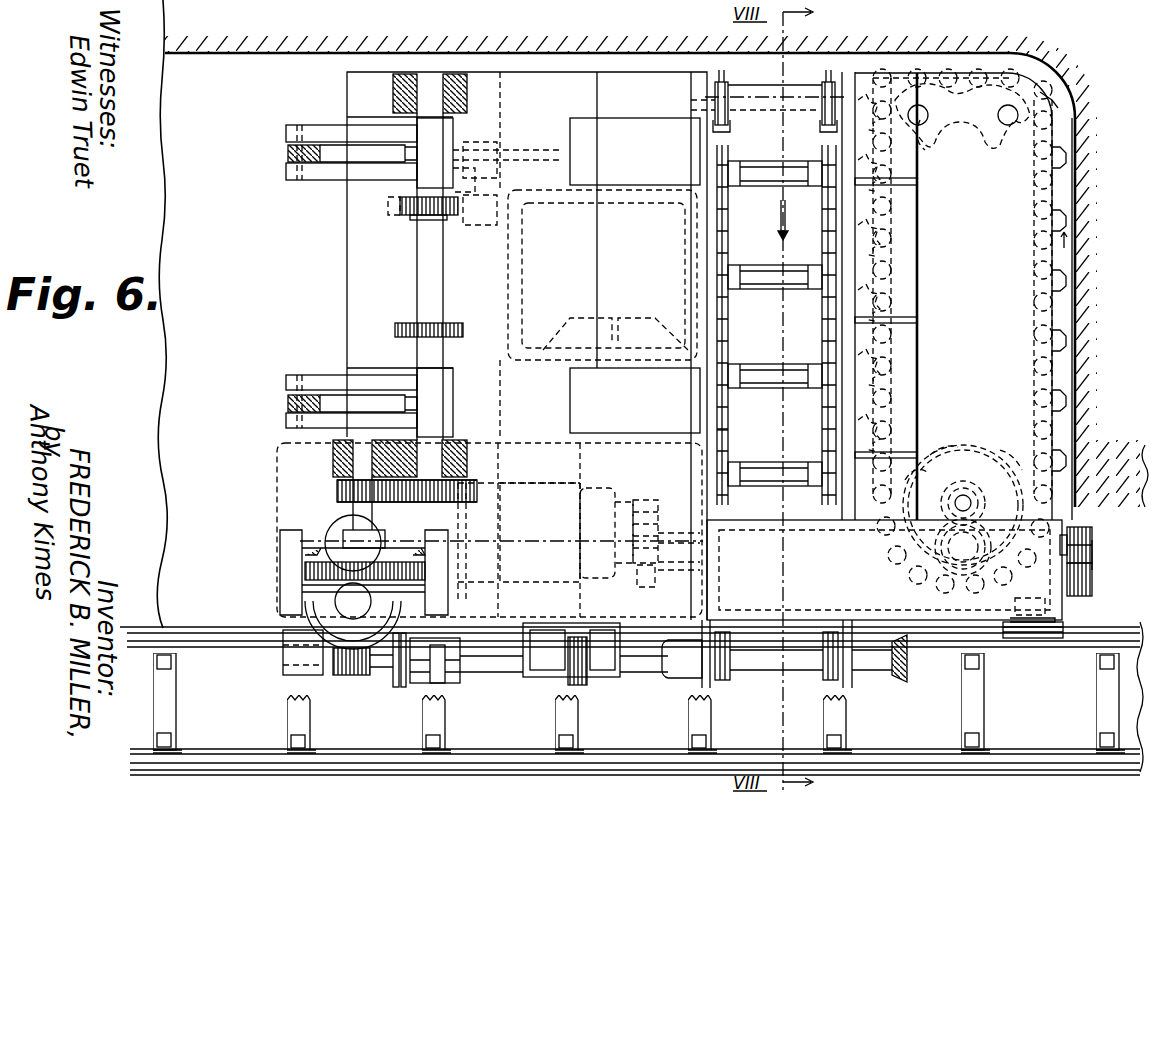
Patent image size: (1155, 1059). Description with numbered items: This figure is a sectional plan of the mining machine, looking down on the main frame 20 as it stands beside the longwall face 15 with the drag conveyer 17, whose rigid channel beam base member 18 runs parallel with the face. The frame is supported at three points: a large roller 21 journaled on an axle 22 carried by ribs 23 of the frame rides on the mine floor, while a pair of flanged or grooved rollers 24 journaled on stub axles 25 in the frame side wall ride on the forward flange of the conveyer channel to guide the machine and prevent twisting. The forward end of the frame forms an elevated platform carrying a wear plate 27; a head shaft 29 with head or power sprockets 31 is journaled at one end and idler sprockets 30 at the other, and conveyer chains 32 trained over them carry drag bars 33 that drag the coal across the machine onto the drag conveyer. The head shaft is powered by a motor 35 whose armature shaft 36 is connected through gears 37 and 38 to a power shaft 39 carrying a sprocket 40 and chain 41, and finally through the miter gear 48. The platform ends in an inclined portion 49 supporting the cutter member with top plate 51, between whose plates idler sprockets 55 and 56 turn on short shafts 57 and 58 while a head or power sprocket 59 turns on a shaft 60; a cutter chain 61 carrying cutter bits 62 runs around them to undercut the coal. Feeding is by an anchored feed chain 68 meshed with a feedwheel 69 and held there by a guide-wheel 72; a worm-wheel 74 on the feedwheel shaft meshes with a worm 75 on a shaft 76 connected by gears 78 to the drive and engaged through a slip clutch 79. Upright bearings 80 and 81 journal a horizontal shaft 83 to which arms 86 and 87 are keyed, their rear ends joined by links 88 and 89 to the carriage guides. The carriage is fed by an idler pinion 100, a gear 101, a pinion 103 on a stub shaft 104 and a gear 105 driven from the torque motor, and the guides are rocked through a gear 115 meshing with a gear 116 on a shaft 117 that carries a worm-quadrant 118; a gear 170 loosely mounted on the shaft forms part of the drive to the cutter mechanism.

The longwall face 15 is at (1123, 498).
The drag conveyer 17 is at (165, 707).
The channel beam base member 18 is at (142, 621).
The main frame 20 is at (347, 300).
The large roller 21 is at (688, 300).
The axle 22 is at (612, 282).
The ribs 23 is at (532, 190).
The flanged or grooved rollers 24 is at (1038, 638).
The stub axles 25 is at (1045, 605).
The wear plate 27 is at (776, 325).
The head shaft 29 is at (668, 660).
The idler sprockets 30 is at (822, 78).
The head or power sprockets 31 is at (722, 680).
The conveyer chains 32 is at (730, 437).
The drag bars 33 is at (768, 364).
The motor 35 is at (600, 492).
The armature shaft 36 is at (620, 529).
The gear 37 is at (652, 500).
The gear 38 is at (645, 590).
The power shaft 39 is at (1092, 551).
The sprocket 40 is at (1085, 536).
The chain 41 is at (1092, 583).
The miter gear 48 is at (906, 680).
The inclined portion 49 is at (912, 379).
The top plate 51 is at (1010, 352).
The idler sprocket 55 is at (920, 120).
The idler sprocket 56 is at (990, 130).
The short shaft 57 is at (925, 150).
The short shaft 58 is at (1012, 118).
The head or power sprocket 59 is at (947, 430).
The shaft 60 is at (963, 503).
The cutter chain 61 is at (1040, 298).
The cutter bits 62 is at (1065, 272).
The feed chain 68 is at (305, 648).
The feedwheel 69 is at (330, 605).
The guide-wheel 72 is at (330, 545).
The worm-wheel 74 is at (398, 690).
The worm 75 is at (338, 680).
The shaft 76 is at (486, 672).
The gears 78 is at (580, 685).
The slip clutch 79 is at (440, 683).
The upright supporting bracket or bearing 80 is at (470, 440).
The upright supporting bracket or bearing 81 is at (393, 97).
The horizontal shaft 83 is at (420, 269).
The arm 86 is at (325, 380).
The arm 87 is at (330, 175).
The link 88 is at (288, 402).
The link 89 is at (288, 154).
The idler pinion 100 is at (420, 215).
The gear 101 is at (388, 215).
The pinion 103 is at (496, 208).
The stub shaft 104 is at (485, 142).
The gear 105 is at (530, 150).
The gear 115 is at (480, 492).
The gear 116 is at (337, 492).
The shaft 117 is at (342, 460).
The worm-quadrant 118 is at (305, 570).
The gear 170 is at (456, 325).